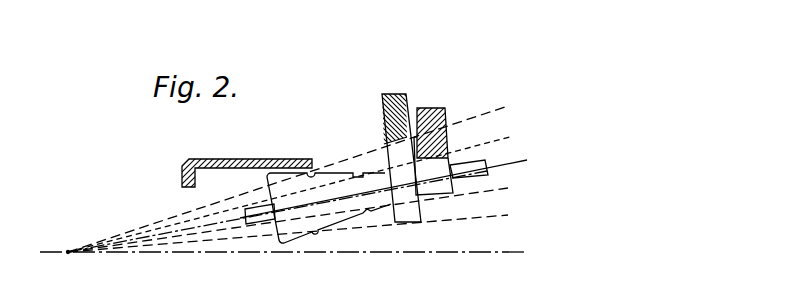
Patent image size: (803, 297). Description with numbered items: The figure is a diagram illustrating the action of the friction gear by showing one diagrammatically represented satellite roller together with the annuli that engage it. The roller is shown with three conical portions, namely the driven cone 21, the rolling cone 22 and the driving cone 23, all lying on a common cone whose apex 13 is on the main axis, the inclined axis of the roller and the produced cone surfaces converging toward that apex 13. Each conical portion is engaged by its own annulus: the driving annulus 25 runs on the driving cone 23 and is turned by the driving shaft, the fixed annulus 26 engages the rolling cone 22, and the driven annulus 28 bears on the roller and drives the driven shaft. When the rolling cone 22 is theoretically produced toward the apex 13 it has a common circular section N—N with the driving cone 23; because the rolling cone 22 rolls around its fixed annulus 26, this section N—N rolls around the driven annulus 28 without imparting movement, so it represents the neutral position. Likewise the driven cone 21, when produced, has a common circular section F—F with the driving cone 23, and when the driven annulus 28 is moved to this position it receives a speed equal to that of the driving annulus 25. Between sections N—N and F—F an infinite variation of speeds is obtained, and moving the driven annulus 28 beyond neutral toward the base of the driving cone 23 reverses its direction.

The apex 13 is at (69, 250).
The driven cone 21 is at (435, 190).
The rolling cone 22 is at (407, 215).
The driving cone 23 is at (337, 213).
The driving annulus 25 is at (442, 113).
The fixed annulus 26 is at (407, 102).
The driven annulus 28 is at (303, 166).
The common circular section N— N is at (313, 173).
The common circular section F— F is at (357, 173).